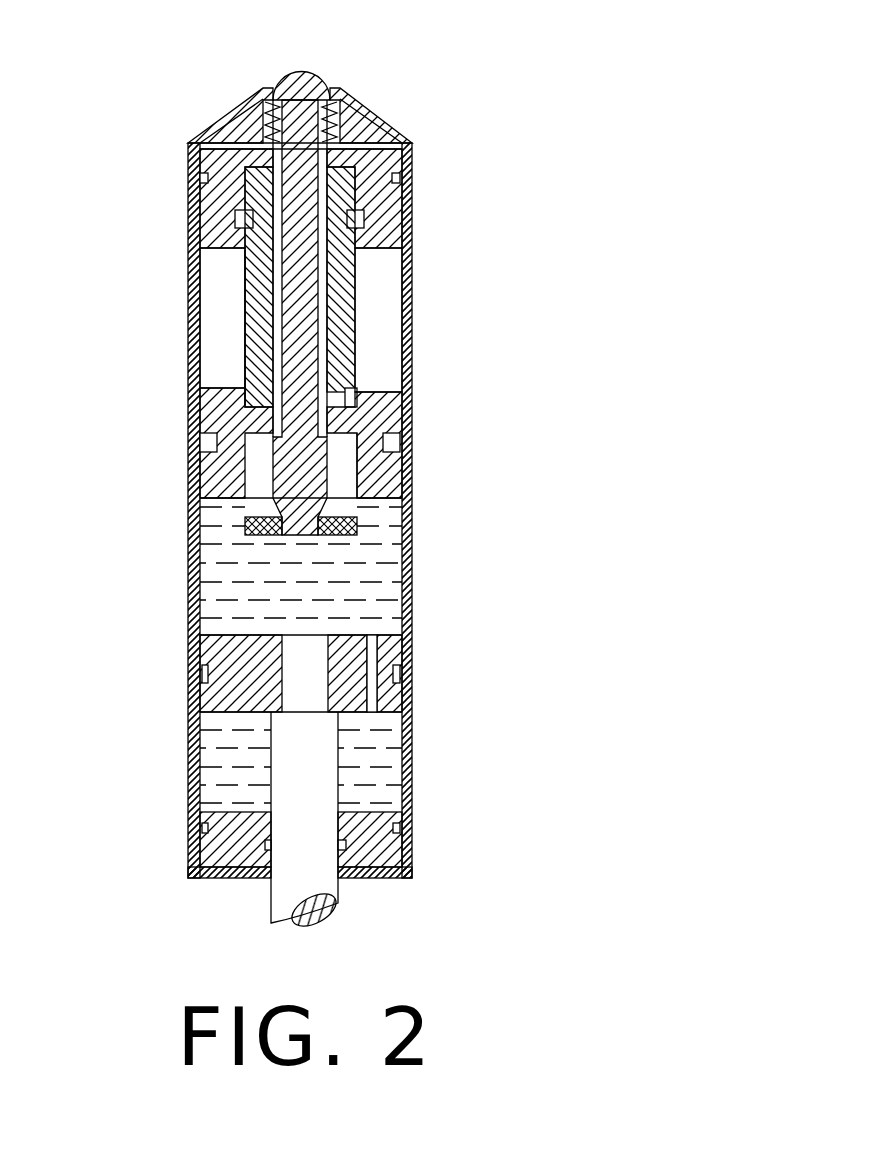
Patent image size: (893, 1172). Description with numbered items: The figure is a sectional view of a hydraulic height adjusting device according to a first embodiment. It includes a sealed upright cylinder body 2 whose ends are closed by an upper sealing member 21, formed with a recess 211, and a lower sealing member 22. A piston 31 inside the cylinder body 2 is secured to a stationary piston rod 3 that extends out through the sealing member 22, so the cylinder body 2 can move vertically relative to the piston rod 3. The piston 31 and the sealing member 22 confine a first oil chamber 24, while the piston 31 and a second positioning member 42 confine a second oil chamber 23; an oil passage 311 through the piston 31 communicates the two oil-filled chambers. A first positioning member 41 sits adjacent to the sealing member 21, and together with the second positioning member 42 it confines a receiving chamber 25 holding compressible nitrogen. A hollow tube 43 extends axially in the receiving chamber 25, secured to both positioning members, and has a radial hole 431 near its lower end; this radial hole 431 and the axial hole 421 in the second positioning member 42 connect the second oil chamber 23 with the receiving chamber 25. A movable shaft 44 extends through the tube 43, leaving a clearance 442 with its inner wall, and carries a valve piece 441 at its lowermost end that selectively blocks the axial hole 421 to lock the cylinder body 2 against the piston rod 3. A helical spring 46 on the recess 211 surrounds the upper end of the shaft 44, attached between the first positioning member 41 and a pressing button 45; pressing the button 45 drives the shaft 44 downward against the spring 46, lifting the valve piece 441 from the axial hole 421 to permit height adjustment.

The cylinder body 2 is at (422, 680).
The piston rod 3 is at (347, 887).
The sealing member 21 is at (337, 133).
The recess 211 is at (400, 138).
The sealing member 22 is at (387, 850).
The second oil chamber 23 is at (383, 572).
The first oil chamber 24 is at (373, 777).
The receiving chamber 25 is at (383, 360).
The piston 31 is at (356, 691).
The oil passage 311 is at (413, 647).
The first positioning member 41 is at (402, 220).
The second positioning member 42 is at (338, 480).
The axial hole 421 is at (471, 460).
The hollow tube 43 is at (347, 323).
The radial hole 431 is at (352, 395).
The movable shaft 44 is at (308, 275).
The valve piece 441 is at (347, 508).
The clearance 442 is at (270, 323).
The pressing button 45 is at (300, 73).
The helical spring 46 is at (333, 127).